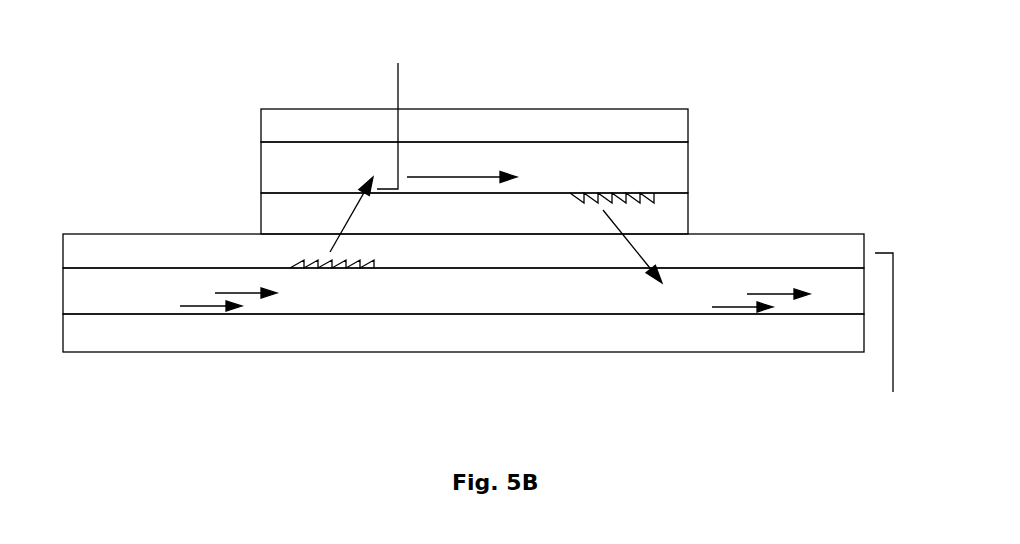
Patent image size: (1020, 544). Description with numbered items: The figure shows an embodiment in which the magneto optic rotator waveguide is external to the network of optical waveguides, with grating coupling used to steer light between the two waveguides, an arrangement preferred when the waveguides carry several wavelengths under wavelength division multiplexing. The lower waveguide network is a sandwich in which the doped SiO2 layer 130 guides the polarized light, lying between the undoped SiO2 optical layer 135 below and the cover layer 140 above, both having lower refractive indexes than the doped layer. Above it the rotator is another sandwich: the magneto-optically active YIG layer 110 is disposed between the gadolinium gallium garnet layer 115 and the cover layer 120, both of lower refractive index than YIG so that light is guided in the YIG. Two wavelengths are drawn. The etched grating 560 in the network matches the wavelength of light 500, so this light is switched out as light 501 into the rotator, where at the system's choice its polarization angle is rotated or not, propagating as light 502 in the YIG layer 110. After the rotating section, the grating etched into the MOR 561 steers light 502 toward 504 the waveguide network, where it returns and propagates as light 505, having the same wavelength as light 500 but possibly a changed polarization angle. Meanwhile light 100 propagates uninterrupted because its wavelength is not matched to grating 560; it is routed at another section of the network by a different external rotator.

The cover layer 120 is at (255, 127).
The magneto-optically active layer 110 is at (255, 177).
The gadolinium gallium garnet layer 115 is at (255, 220).
The light switched out into the MOR 501 is at (397, 114).
The light propagating in the MOR 502 is at (475, 168).
The grating etched into the MOR 561 is at (628, 185).
The light steered toward the waveguide network 504 is at (647, 252).
The doped SiO2 layer 130 is at (443, 332).
The undoped SiO2 optical layer 135 is at (203, 360).
The cover layer 140 is at (882, 337).
The etched grating 560 is at (347, 277).
The light of the second wavelength 500 is at (253, 302).
The light k 100 is at (200, 308).
The returned light 505 is at (783, 303).